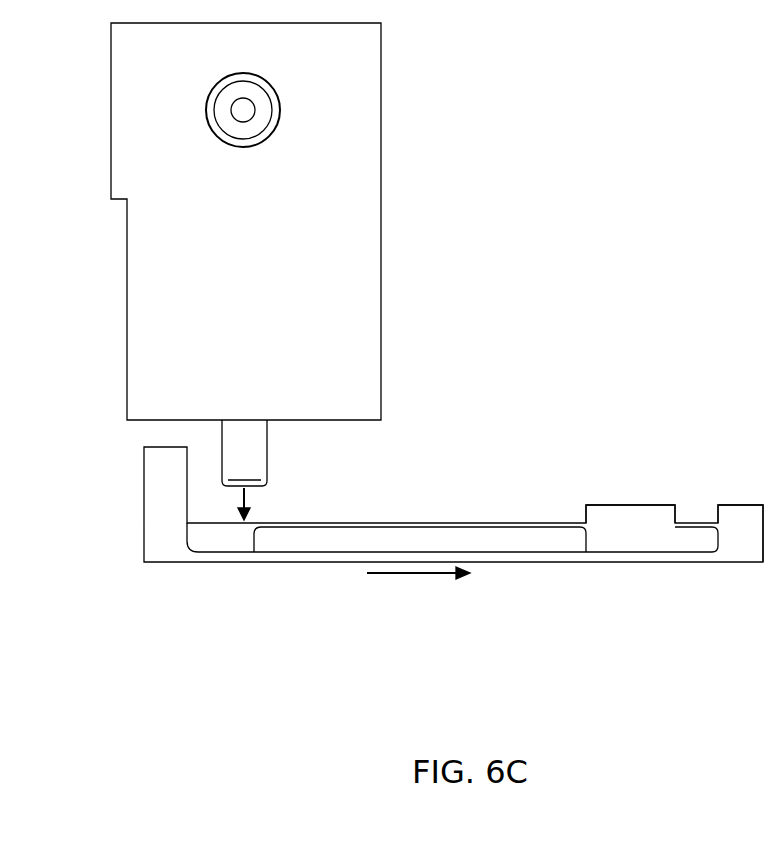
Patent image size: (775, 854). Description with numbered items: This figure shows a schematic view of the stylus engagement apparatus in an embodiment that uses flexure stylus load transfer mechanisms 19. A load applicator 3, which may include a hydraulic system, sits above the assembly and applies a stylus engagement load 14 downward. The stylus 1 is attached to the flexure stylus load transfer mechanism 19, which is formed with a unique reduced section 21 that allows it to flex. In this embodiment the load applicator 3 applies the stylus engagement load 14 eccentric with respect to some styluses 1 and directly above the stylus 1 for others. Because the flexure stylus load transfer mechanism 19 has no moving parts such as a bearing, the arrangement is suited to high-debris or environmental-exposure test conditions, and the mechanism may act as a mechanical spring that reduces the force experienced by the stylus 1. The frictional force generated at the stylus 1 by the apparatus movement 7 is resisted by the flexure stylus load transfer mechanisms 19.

The stylus 1 is at (173, 563).
The load applicator 3 is at (85, 23).
The apparatus movement 7 is at (418, 582).
The stylus engagement load 14 is at (248, 498).
The flexure stylus load transfer mechanism 19 is at (608, 523).
The reduced section 21 is at (443, 541).